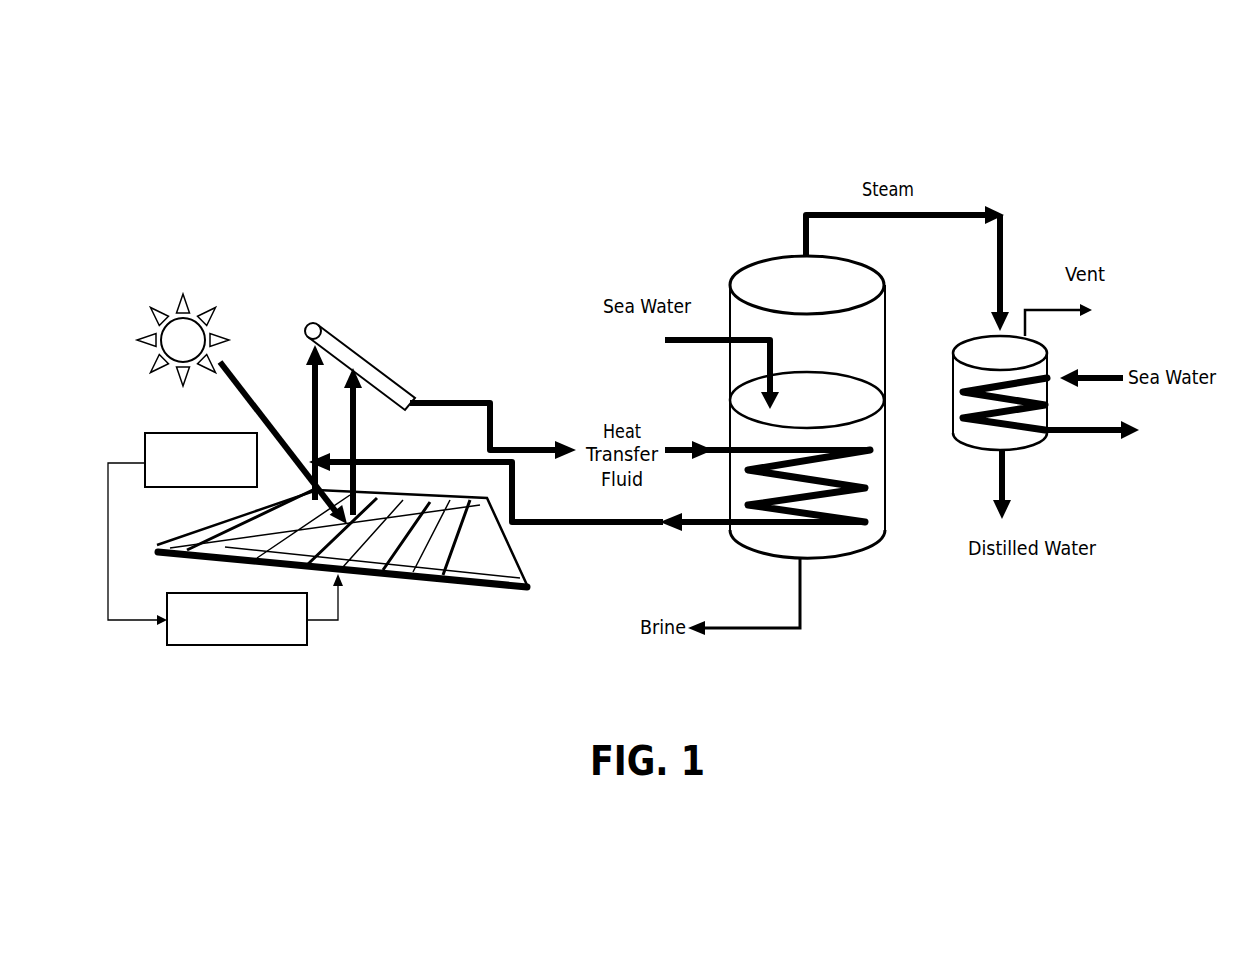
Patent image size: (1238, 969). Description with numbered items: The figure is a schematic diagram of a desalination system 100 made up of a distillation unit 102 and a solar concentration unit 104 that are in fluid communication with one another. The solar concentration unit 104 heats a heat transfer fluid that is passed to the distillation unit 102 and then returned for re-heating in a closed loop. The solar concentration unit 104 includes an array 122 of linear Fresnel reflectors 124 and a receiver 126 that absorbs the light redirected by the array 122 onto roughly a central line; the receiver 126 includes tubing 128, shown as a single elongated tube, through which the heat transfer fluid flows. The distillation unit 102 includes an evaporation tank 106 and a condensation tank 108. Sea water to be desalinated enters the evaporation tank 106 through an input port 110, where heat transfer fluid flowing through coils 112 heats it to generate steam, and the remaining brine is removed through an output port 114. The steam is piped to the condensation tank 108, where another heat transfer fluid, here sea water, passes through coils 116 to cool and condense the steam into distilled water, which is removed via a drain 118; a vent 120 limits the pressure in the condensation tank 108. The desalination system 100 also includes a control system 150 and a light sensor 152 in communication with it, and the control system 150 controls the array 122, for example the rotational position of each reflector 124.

The desalination system 100 is at (1078, 76).
The distillation unit 102 is at (1081, 220).
The solar concentration unit 104 is at (304, 230).
The evaporation tank 106 is at (873, 267).
The condensation tank 108 is at (1043, 350).
The input port 110 is at (714, 347).
The coils 112 is at (850, 515).
The output port 114 is at (802, 560).
The coils 116 is at (1003, 436).
The drain 118 is at (998, 456).
The vent 120 is at (1025, 308).
The array of linear Fresnel reflectors 122 is at (538, 538).
The linear Fresnel reflectors 124 is at (400, 568).
The receiver 126 is at (304, 302).
The tubing 128 is at (388, 385).
The control system 150 is at (235, 645).
The light sensor 152 is at (144, 448).